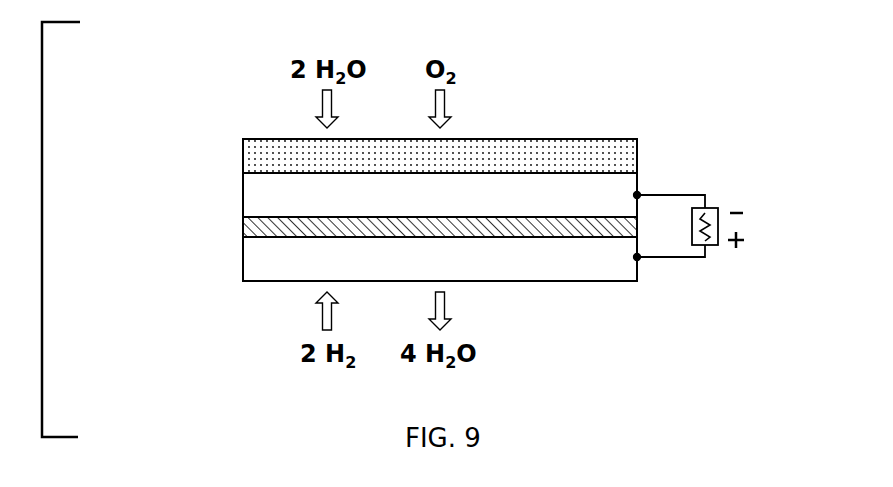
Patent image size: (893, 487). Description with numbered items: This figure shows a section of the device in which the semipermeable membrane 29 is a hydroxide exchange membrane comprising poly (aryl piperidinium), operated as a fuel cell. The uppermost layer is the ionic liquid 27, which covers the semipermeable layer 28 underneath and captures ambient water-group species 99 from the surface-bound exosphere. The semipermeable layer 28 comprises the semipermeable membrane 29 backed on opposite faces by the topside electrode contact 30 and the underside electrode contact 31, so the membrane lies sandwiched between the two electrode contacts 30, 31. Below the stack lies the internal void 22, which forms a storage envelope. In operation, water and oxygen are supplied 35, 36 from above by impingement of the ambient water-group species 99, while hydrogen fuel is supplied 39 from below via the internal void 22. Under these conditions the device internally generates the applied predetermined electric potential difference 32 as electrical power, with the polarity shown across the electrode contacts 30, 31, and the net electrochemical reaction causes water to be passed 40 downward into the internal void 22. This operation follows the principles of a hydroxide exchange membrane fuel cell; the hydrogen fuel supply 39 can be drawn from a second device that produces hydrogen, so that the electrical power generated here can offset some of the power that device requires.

The internal void 22 is at (561, 326).
The ionic liquid 27 is at (231, 139).
The semipermeable layer 28 is at (147, 173).
The semipermeable membrane 29 is at (231, 217).
The topside electrode contact 30 is at (231, 173).
The underside electrode contact 31 is at (231, 237).
The applied predetermined electric potential difference 32 is at (712, 208).
The water supply 35 is at (309, 109).
The oxygen supply 36 is at (422, 109).
The hydrogen fuel supply 39 is at (309, 311).
The water passing 40 is at (422, 311).
The water-group species 99 is at (561, 122).